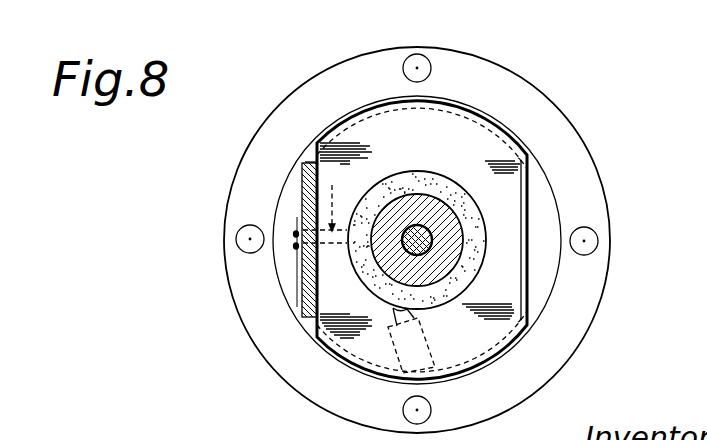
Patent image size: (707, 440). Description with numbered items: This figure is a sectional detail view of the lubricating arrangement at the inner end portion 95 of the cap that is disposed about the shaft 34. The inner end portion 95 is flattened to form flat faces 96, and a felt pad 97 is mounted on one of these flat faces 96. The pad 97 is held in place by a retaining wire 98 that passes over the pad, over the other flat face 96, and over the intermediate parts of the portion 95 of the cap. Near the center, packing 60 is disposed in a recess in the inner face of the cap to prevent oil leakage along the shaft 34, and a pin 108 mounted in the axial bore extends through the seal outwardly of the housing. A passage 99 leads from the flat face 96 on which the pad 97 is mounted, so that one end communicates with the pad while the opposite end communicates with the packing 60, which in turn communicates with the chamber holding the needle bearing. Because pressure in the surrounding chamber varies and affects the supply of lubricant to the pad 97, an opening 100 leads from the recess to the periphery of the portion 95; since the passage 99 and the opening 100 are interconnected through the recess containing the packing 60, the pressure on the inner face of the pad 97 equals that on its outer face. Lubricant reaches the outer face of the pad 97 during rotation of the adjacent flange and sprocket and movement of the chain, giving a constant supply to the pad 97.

The shaft 34 is at (408, 205).
The packing 60 is at (390, 184).
The inner end portion of the cap 95 is at (489, 149).
The flat face 96 is at (313, 318).
The felt pad 97 is at (303, 279).
The retaining wire 98 is at (310, 162).
The passage 99 is at (332, 210).
The opening 100 is at (432, 339).
The pin 108 is at (430, 245).